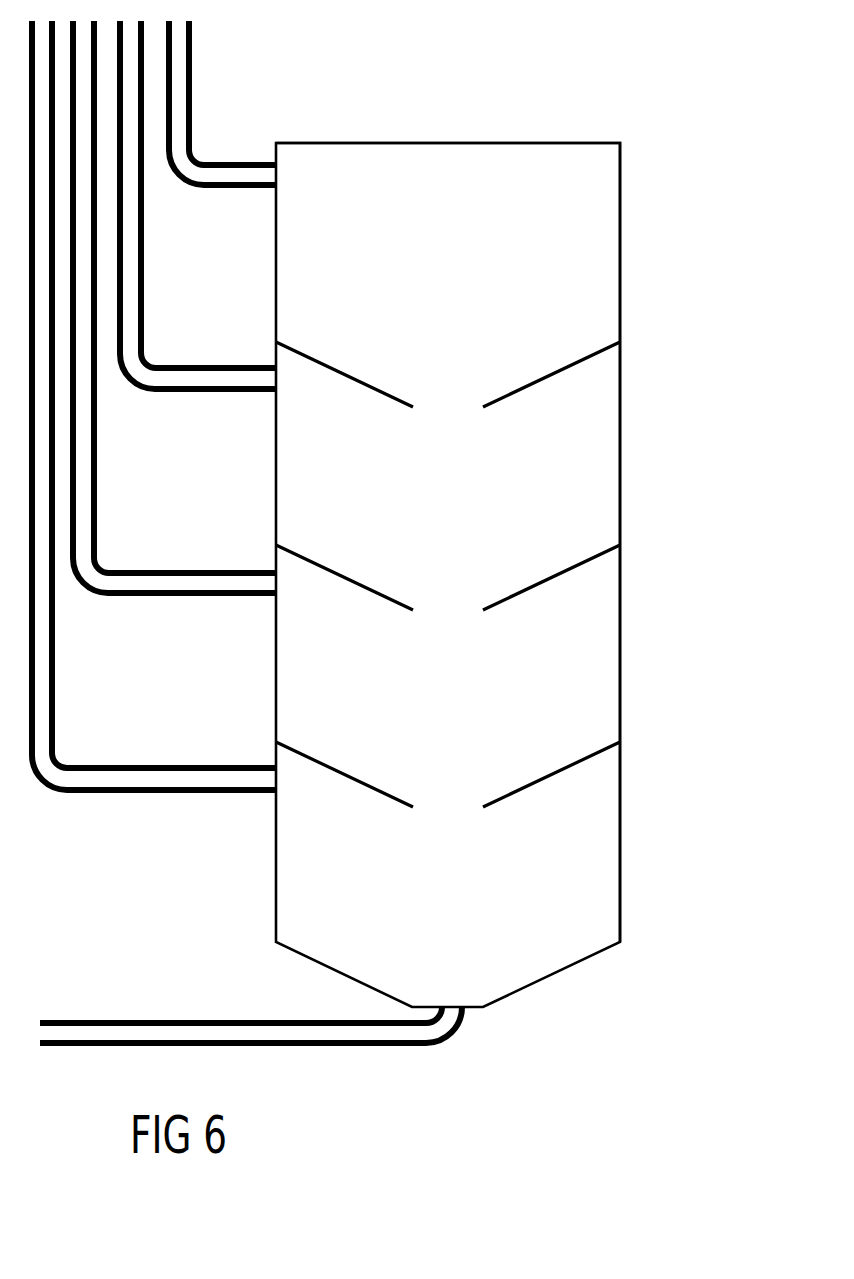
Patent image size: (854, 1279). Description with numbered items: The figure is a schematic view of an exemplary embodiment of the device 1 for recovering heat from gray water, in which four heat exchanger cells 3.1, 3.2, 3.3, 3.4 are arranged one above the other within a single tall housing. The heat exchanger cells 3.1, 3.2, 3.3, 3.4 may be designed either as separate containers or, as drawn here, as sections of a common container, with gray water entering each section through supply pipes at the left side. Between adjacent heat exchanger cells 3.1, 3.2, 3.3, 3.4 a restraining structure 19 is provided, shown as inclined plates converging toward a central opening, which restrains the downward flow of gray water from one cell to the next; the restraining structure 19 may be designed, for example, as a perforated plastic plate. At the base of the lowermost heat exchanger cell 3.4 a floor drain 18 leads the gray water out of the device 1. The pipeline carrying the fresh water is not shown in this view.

The device 1 is at (514, 98).
The heat exchanger cell 3.1 is at (620, 237).
The heat exchanger cell 3.2 is at (620, 437).
The heat exchanger cell 3.3 is at (620, 635).
The heat exchanger cell 3.4 is at (620, 818).
The floor drain 18 is at (163, 1017).
The restraining structure 19 is at (523, 387).